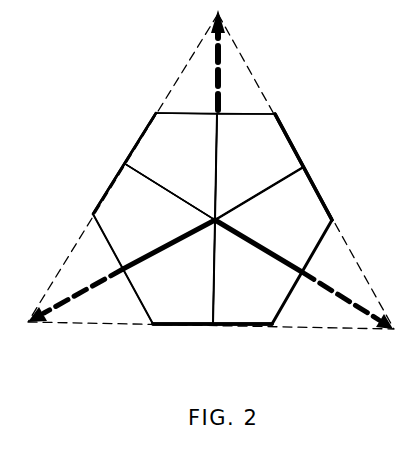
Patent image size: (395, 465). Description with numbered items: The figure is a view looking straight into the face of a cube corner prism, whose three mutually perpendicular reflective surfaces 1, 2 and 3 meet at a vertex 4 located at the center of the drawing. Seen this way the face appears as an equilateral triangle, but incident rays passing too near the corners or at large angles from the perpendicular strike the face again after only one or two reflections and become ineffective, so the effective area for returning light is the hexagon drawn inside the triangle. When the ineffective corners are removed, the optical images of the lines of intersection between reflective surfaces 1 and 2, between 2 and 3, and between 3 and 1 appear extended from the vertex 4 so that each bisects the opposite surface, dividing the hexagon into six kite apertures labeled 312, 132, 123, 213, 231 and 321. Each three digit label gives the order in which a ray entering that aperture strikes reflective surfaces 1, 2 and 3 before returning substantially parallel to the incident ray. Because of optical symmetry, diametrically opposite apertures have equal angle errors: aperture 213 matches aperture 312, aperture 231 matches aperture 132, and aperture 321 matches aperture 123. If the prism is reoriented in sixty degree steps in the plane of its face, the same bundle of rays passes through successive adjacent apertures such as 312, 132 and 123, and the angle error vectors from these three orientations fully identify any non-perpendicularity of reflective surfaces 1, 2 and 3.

The reflective surface 1 is at (326, 181).
The reflective surface 2 is at (285, 331).
The reflective surface 3 is at (86, 218).
The vertex 4 is at (222, 219).
The kite aperture 312 is at (171, 166).
The kite aperture 132 is at (259, 167).
The kite aperture 123 is at (273, 219).
The kite aperture 213 is at (257, 272).
The kite aperture 231 is at (169, 272).
The kite aperture 321 is at (154, 217).